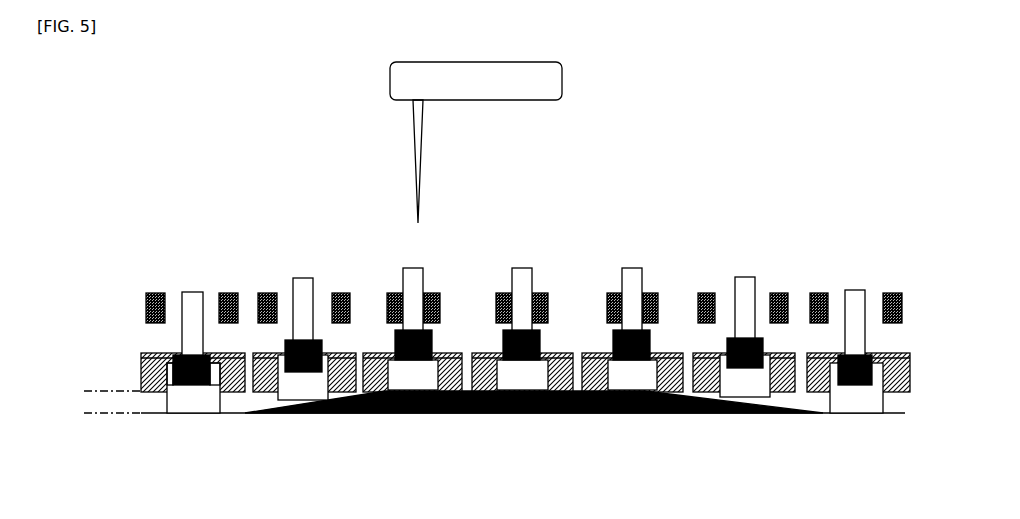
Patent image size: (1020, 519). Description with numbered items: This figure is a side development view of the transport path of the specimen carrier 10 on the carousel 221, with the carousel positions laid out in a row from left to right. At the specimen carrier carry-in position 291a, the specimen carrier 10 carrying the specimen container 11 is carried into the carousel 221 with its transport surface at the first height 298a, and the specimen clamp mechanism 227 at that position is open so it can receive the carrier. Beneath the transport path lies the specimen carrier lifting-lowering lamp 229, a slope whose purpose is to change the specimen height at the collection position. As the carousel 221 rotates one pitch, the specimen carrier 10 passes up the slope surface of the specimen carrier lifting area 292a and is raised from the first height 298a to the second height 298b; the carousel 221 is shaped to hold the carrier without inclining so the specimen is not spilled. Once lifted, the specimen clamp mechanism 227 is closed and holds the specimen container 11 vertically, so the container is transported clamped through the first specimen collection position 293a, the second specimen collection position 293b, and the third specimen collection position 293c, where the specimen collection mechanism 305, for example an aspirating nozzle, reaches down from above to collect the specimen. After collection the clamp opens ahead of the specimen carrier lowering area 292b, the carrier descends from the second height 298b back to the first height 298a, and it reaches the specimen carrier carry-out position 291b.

The specimen collection mechanism 305 is at (416, 135).
The specimen clamp mechanism 227 is at (229, 292).
The carousel 221 is at (141, 373).
The first height 298a is at (471, 413).
The second height 298b is at (89, 387).
The specimen carrier 10 is at (190, 403).
The specimen container 11 is at (202, 327).
The specimen carrier lifting-lowering lamp 229 is at (462, 417).
The specimen carrier carry-in position 291a is at (197, 307).
The specimen carrier lifting area 292a is at (303, 314).
The first specimen collection position 293a is at (416, 309).
The second specimen collection position 293b is at (523, 309).
The third specimen collection position 293c is at (632, 309).
The specimen carrier lowering area 292b is at (748, 313).
The specimen carrier carry-out position 291b is at (856, 321).